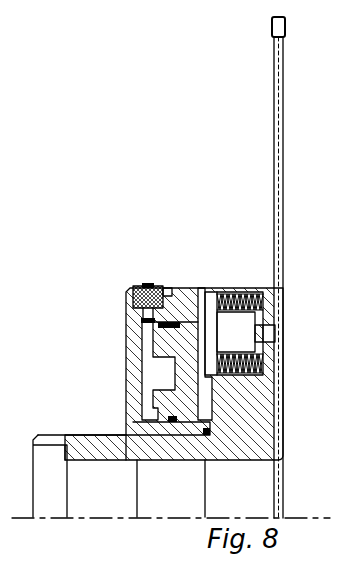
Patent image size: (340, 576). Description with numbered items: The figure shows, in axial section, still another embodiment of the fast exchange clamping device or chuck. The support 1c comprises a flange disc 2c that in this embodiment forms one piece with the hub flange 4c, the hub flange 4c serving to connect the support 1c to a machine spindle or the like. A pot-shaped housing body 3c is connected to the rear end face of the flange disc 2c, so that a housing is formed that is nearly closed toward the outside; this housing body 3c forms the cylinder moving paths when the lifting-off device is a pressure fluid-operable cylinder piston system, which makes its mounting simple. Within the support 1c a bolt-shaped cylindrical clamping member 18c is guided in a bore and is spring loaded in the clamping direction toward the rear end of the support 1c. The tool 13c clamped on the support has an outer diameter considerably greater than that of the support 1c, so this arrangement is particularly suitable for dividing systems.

The support 1c is at (167, 280).
The flange disc 2c is at (283, 407).
The housing body 3c is at (132, 375).
The hub flange 4c is at (102, 434).
The tool 13c is at (285, 170).
The clamping member 18c is at (232, 320).